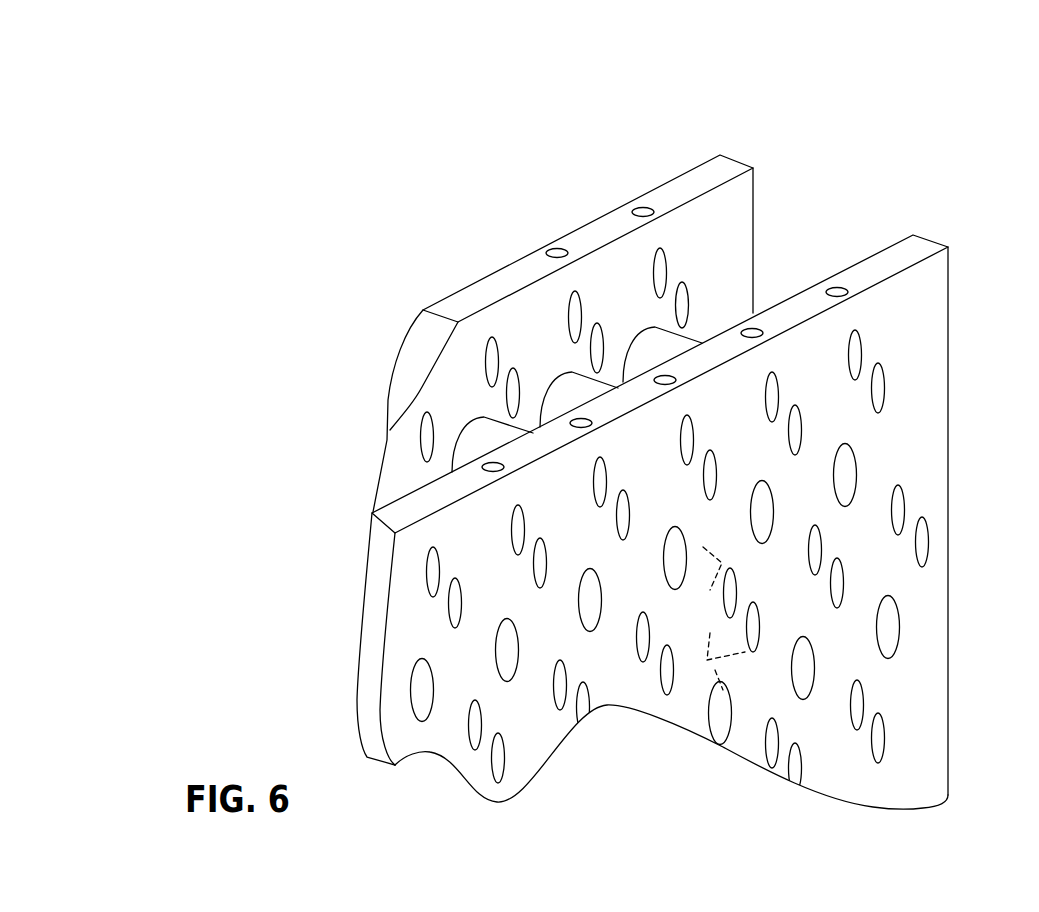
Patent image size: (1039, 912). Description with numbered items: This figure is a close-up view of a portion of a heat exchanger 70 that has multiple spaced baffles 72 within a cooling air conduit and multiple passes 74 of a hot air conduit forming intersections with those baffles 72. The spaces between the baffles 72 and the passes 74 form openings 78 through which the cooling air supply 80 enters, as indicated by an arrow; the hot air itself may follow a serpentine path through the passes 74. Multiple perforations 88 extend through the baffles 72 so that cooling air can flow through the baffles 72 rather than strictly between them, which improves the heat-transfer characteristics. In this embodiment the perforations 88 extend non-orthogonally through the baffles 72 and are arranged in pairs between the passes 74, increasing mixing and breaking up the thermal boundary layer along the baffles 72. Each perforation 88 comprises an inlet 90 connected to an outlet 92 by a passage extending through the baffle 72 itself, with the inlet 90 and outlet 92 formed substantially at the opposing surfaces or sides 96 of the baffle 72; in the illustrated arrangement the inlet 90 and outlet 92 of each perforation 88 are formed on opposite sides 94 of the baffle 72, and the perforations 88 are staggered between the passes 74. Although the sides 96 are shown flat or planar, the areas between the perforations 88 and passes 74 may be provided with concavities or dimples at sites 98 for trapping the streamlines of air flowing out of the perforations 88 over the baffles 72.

The heat exchanger 70 is at (1018, 69).
The baffle 72 is at (797, 295).
The pass 74 is at (572, 390).
The opening 78 is at (725, 256).
The cooling air supply 80 is at (665, 140).
The perforation 88 is at (884, 387).
The inlet 90 is at (718, 595).
The outlet 92 is at (740, 607).
The opposite sides of the baffle 94 is at (725, 565).
The side of the baffle 96 is at (867, 258).
The site 98 is at (852, 643).